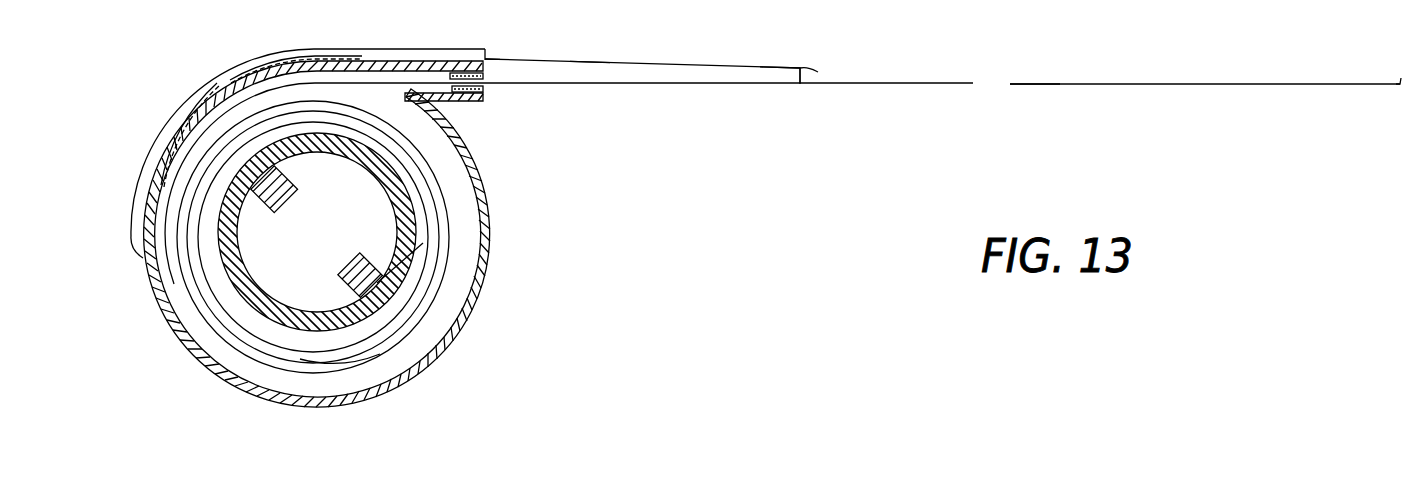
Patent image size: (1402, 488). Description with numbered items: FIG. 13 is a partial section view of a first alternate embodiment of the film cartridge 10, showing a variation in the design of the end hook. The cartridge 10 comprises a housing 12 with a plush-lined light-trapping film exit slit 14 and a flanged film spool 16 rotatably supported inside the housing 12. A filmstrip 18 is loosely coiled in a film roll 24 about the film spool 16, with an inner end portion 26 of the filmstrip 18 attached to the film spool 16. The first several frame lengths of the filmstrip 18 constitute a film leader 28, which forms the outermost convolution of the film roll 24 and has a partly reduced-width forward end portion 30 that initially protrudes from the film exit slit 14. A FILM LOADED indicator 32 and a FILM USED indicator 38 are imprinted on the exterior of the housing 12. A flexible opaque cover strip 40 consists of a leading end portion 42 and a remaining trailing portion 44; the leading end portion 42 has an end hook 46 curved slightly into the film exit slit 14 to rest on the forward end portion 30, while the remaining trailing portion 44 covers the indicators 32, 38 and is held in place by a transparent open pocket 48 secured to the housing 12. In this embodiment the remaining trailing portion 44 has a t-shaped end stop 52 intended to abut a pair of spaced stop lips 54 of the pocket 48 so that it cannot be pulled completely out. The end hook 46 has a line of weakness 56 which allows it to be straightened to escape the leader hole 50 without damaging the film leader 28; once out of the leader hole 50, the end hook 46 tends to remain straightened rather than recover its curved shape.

The film cartridge 10 is at (522, 262).
The housing 12 is at (480, 305).
The film exit slit 14 is at (487, 78).
The film spool 16 is at (384, 300).
The filmstrip 18 is at (371, 336).
The film roll 24 is at (437, 229).
The inner end portion 26 is at (363, 143).
The film leader 28 is at (1062, 98).
The forward end portion 30 is at (1401, 84).
The FILM LOADED indicator 32 is at (290, 58).
The FILM USED indicator 38 is at (192, 106).
The cover strip 40 is at (667, 60).
The leading end portion 42 is at (781, 66).
The remaining trailing portion 44 is at (588, 60).
The end hook 46 is at (826, 73).
The open pocket 48 is at (364, 42).
The leader hole 50 is at (1010, 85).
The t-shaped end stop 52 is at (478, 56).
The stop lips 54 is at (490, 60).
The line of weakness 56 is at (806, 84).